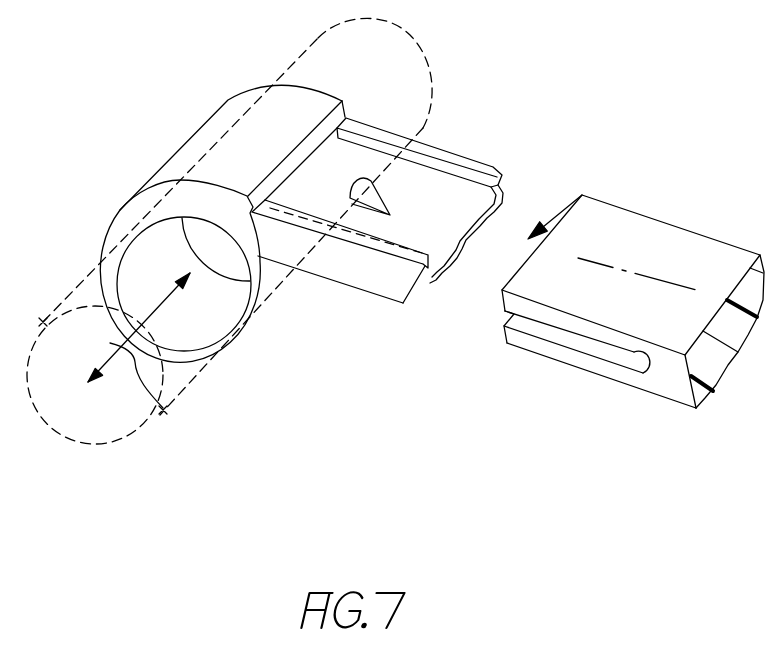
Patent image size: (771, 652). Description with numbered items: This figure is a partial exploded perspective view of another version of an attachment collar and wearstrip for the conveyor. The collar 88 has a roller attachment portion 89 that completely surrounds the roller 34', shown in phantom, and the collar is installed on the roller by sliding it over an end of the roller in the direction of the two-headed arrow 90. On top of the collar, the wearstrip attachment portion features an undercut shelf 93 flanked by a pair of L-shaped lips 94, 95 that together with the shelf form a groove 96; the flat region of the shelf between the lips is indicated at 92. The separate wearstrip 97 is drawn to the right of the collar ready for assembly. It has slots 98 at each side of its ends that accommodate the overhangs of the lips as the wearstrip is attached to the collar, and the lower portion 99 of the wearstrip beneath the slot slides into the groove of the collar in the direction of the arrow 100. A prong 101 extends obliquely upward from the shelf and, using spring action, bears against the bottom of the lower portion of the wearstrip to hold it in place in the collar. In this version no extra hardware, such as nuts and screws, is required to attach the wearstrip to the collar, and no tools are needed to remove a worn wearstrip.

The collar 88 is at (202, 127).
The roller attachment portion 89 is at (133, 209).
The roller 34' is at (226, 231).
The two-headed arrow 90 is at (163, 408).
The slot floor 92 is at (467, 193).
The undercut shelf 93 is at (450, 227).
The L-shaped lip 94 is at (445, 152).
The L-shaped lip 95 is at (378, 248).
The groove 96 is at (432, 283).
The wearstrip 97 is at (711, 243).
The slot 98 is at (548, 332).
The lower portion 99 is at (622, 373).
The arrow 100 is at (578, 258).
The prong 101 is at (398, 200).